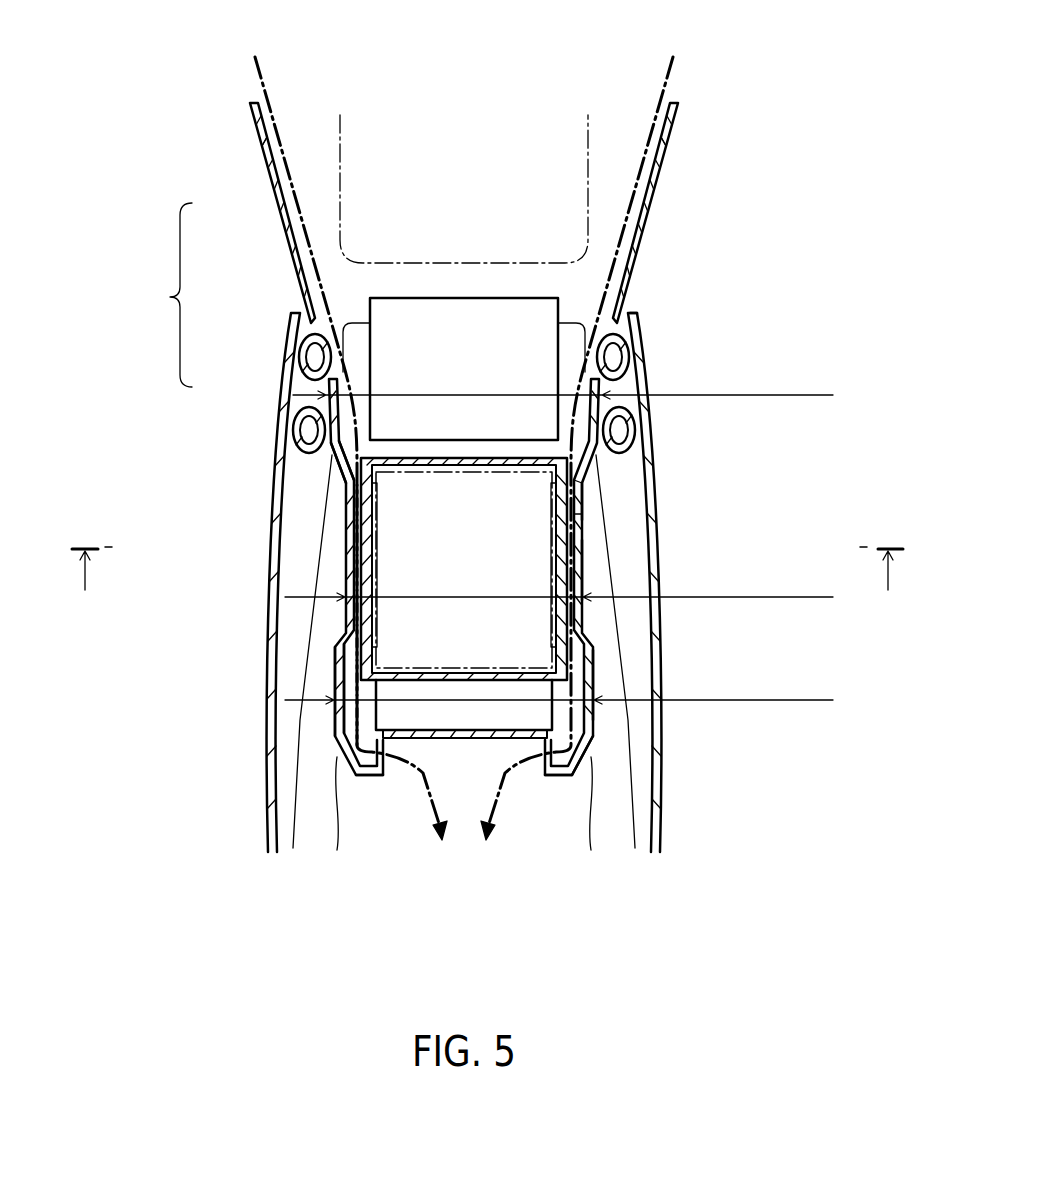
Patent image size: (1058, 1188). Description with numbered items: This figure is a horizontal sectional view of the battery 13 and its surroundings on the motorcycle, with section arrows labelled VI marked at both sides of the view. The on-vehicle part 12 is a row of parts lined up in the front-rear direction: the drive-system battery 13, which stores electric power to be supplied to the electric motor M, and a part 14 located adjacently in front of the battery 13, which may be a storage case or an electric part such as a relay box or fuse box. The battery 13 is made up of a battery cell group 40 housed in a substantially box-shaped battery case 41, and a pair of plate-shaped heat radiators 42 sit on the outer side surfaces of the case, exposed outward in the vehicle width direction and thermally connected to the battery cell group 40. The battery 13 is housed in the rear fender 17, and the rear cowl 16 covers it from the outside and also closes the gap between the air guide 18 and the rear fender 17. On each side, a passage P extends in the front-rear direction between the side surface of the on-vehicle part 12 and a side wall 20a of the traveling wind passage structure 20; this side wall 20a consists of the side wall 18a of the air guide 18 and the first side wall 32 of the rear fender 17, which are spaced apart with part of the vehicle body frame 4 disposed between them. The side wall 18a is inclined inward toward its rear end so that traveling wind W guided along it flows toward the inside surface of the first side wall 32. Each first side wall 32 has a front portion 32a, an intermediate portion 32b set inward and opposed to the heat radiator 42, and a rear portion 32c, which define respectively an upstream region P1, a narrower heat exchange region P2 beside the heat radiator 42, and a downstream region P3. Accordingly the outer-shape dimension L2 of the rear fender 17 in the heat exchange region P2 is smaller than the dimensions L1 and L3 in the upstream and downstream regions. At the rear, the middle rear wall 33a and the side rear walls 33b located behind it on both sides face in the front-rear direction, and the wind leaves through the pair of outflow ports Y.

The vehicle body frame 4 is at (640, 348).
The on-vehicle part 12 is at (163, 295).
The battery 13 is at (357, 433).
The part 14 is at (383, 317).
The rear cowl 16 is at (268, 800).
The rear fender 17 is at (326, 672).
The air guide 18 is at (244, 127).
The side wall of the air guide 18a is at (268, 162).
The traveling wind passage structure 20 is at (335, 512).
The side wall of the traveling wind passage structure 20a is at (337, 468).
The first side wall 32 is at (343, 620).
The front portion 32a is at (587, 412).
The intermediate portion 32b is at (583, 566).
The rear portion 32c is at (597, 682).
The middle rear wall 33a is at (465, 742).
The side rear walls 33b is at (377, 783).
The battery cell group 40 is at (497, 483).
The battery case 41 is at (415, 460).
The heat radiators 42 is at (357, 563).
The traveling wind W is at (255, 75).
The electric motor M is at (337, 200).
The passage P is at (603, 327).
The upstream region P1 is at (580, 438).
The heat exchange region P2 is at (580, 514).
The downstream region P3 is at (573, 742).
The dimension of the outer shape of the rear fender in the upstream region L1 is at (563, 380).
The dimension of the outer shape of the rear fender in the heat exchange region L2 is at (559, 582).
The dimension of the outer shape of the rear fender in the downstream region L3 is at (559, 686).
The outflow ports Y is at (387, 763).
The section line VI is at (490, 575).